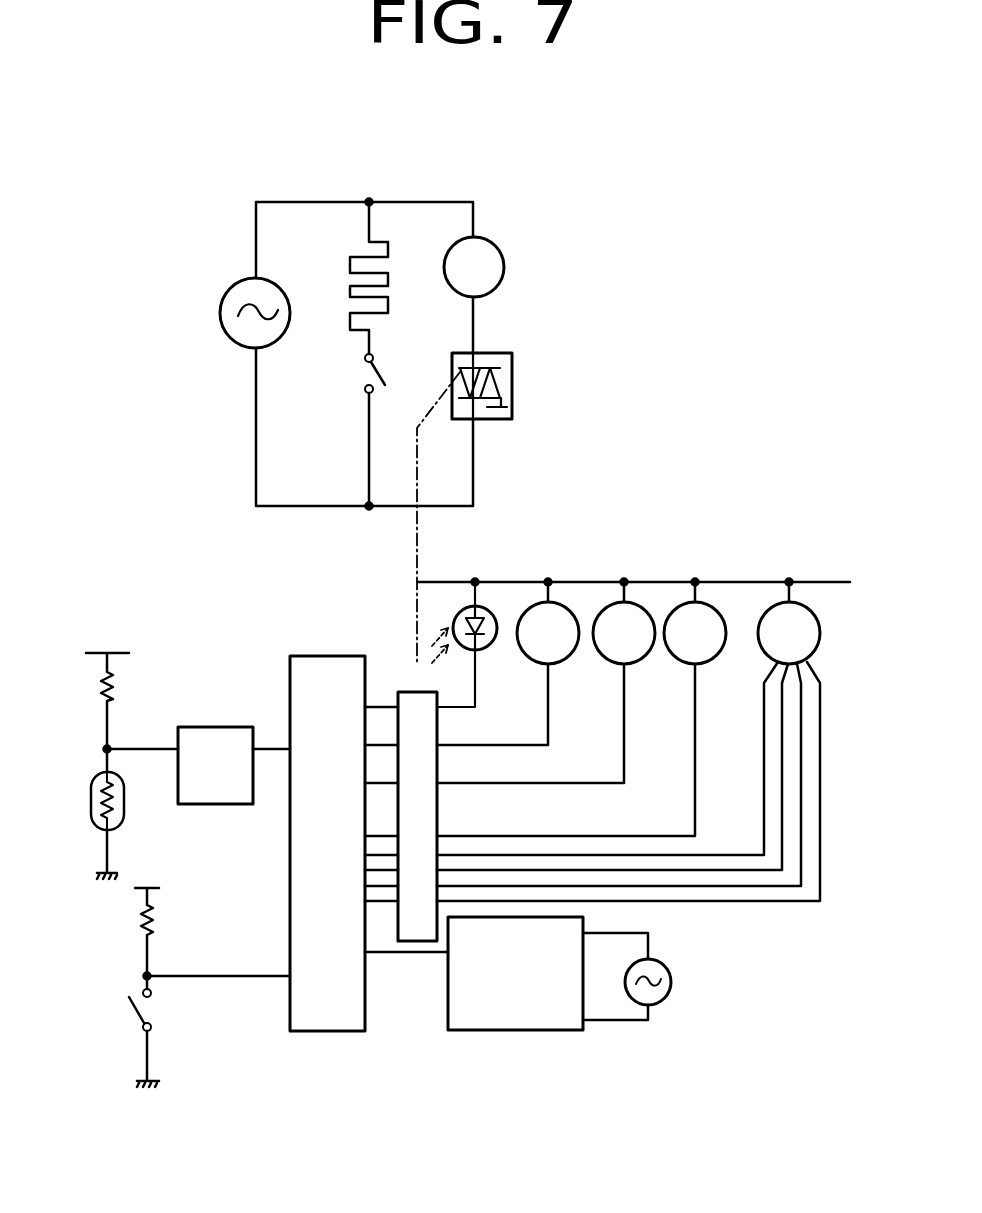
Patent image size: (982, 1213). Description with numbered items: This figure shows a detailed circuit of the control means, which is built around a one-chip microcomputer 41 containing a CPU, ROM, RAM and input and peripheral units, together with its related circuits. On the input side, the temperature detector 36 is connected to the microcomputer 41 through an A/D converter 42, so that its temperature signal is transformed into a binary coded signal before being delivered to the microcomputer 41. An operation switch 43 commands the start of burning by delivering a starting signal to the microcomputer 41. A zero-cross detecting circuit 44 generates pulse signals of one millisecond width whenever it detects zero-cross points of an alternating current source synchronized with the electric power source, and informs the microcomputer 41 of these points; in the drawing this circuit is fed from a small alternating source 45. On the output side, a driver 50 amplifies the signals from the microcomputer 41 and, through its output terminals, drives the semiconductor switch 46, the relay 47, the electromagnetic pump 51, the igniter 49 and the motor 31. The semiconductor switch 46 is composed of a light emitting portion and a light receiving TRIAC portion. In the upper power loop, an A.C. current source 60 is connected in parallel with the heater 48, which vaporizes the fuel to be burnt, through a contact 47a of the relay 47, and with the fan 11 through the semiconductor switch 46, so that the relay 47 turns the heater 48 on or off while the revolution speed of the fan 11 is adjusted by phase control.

The A.C. current source 60 is at (242, 345).
The heater 48 is at (388, 270).
The contact 47a is at (364, 380).
The fan 11 is at (504, 264).
The semiconductor switch 46 is at (512, 370).
The relay 47 is at (562, 603).
The electromagnetic pump 51 is at (637, 603).
The igniter 49 is at (717, 610).
The motor 31 is at (810, 608).
The driver 50 is at (408, 692).
The microcomputer 41 is at (336, 1031).
The A/D converter 42 is at (221, 727).
The temperature detector 36 is at (122, 815).
The operation switch 43 is at (137, 1012).
The zero-cross detecting circuit 44 is at (483, 1030).
The AC power source 45 is at (671, 982).